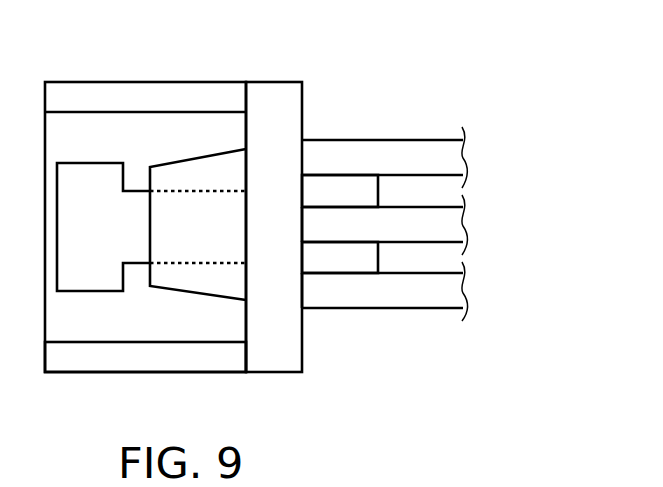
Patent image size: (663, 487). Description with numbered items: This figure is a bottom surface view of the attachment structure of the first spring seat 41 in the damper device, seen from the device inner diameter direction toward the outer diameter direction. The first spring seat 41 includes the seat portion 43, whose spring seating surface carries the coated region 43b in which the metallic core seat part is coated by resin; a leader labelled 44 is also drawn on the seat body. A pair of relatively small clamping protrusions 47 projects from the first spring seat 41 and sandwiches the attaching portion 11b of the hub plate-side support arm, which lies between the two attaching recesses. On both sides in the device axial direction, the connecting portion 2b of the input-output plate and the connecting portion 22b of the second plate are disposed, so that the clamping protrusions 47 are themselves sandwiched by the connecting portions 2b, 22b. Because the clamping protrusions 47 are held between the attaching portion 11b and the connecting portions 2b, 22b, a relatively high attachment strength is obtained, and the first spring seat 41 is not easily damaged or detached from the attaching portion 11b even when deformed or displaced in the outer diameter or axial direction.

The first spring seat 41 is at (126, 76).
The housing bottom wall 44 is at (150, 372).
The seat portion 43 is at (282, 352).
The coated region 43b is at (196, 279).
The clamping protrusion 47 is at (340, 188).
The connecting portion 2b is at (447, 150).
The attaching portion 11b is at (440, 222).
The connecting portion 22b is at (440, 287).